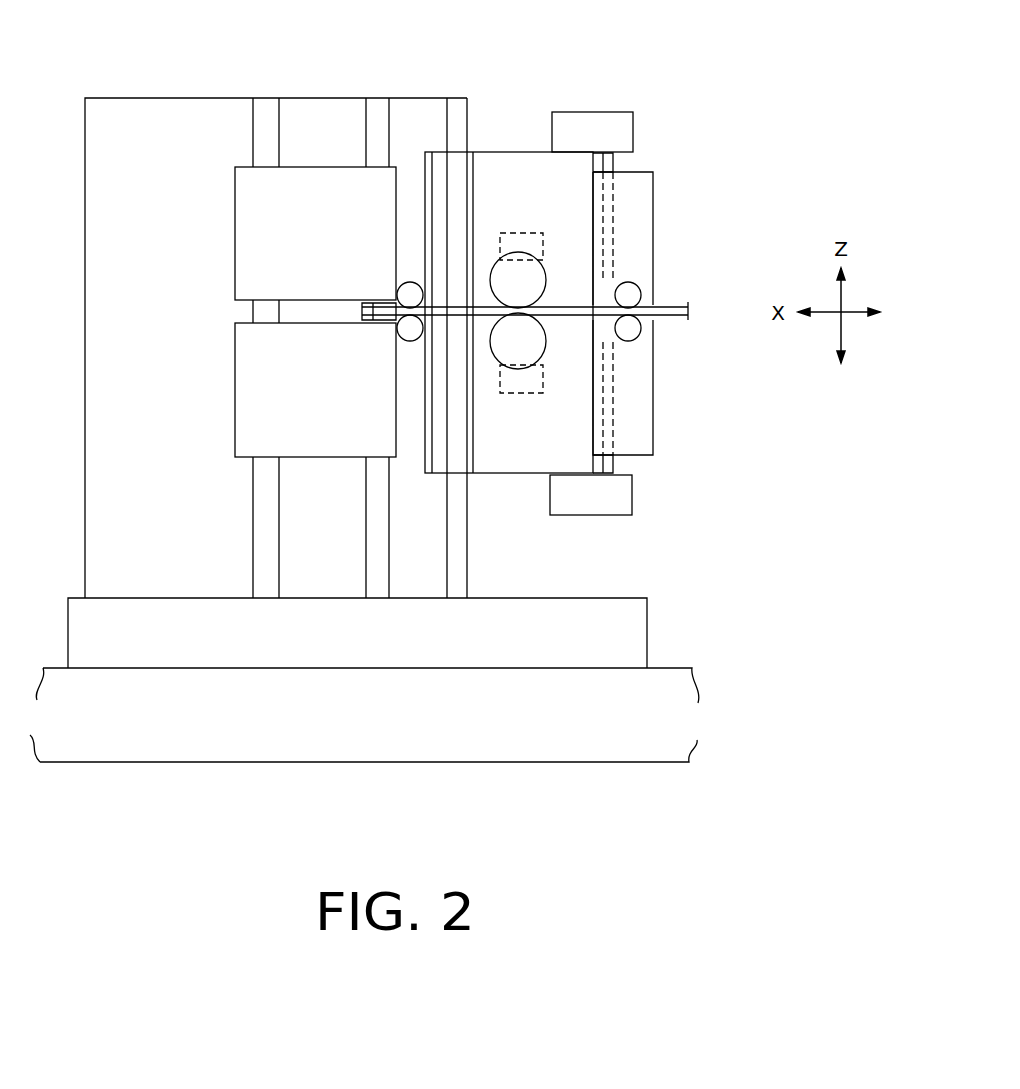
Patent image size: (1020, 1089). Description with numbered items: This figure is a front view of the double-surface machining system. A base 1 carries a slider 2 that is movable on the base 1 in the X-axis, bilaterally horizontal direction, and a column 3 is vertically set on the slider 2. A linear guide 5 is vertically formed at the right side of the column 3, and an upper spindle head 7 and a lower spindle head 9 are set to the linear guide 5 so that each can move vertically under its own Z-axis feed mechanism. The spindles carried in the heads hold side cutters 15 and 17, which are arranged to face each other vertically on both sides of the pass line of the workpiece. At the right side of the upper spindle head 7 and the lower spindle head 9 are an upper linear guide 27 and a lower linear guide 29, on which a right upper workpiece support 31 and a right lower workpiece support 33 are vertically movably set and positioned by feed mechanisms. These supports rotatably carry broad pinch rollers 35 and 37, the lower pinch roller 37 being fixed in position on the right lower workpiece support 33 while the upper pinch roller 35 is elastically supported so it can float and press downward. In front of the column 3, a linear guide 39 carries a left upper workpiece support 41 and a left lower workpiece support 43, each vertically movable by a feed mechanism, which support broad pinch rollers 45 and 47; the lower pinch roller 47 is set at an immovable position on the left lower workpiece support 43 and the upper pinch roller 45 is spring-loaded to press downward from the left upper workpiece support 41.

The base 1 is at (657, 693).
The slider 2 is at (602, 610).
The column 3 is at (152, 117).
The linear guide 5 is at (470, 578).
The upper spindle head 7 is at (512, 162).
The lower spindle head 9 is at (518, 462).
The side cutter 15 is at (540, 272).
The side cutter 17 is at (545, 345).
The upper linear guide 27 is at (613, 160).
The lower linear guide 29 is at (614, 465).
The right upper workpiece support 31 is at (645, 222).
The right lower workpiece support 33 is at (645, 404).
The pinch roller 35 is at (632, 290).
The pinch roller 37 is at (636, 333).
The linear guide 39 is at (265, 108).
The left upper workpiece support 41 is at (247, 227).
The left lower workpiece support 43 is at (250, 390).
The pinch roller 45 is at (400, 285).
The pinch roller 47 is at (400, 340).